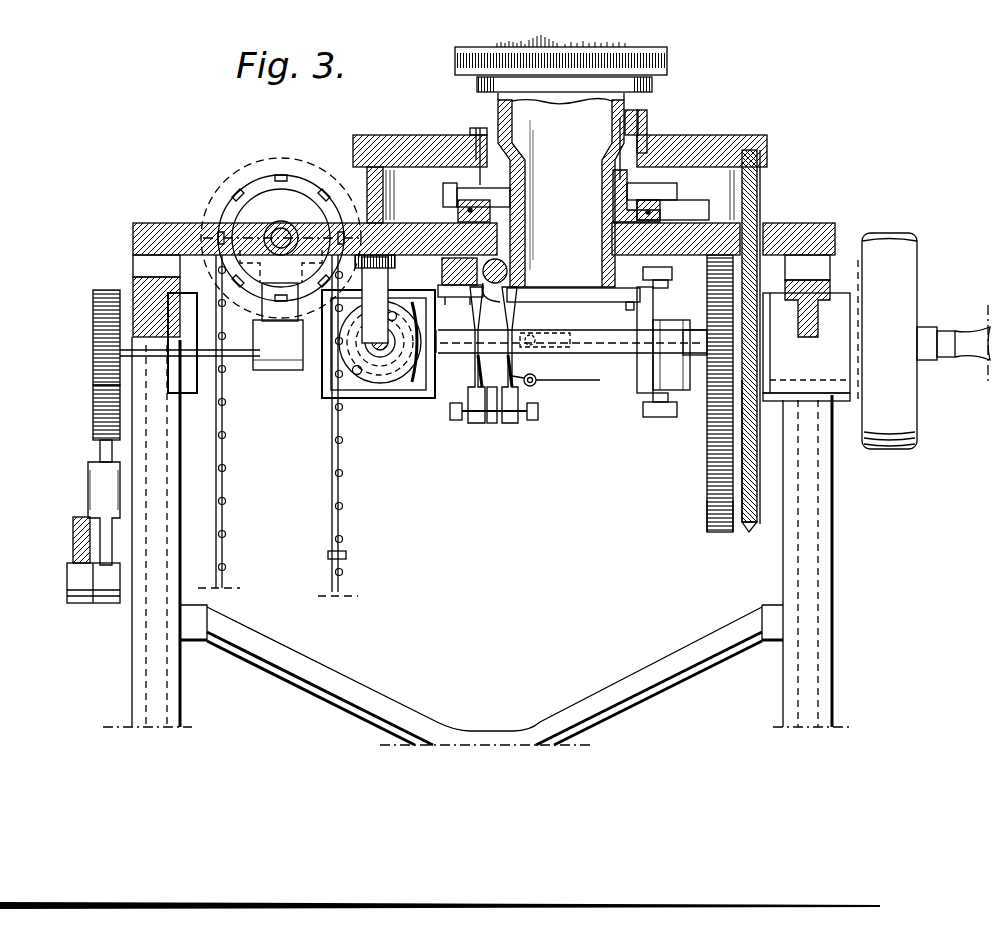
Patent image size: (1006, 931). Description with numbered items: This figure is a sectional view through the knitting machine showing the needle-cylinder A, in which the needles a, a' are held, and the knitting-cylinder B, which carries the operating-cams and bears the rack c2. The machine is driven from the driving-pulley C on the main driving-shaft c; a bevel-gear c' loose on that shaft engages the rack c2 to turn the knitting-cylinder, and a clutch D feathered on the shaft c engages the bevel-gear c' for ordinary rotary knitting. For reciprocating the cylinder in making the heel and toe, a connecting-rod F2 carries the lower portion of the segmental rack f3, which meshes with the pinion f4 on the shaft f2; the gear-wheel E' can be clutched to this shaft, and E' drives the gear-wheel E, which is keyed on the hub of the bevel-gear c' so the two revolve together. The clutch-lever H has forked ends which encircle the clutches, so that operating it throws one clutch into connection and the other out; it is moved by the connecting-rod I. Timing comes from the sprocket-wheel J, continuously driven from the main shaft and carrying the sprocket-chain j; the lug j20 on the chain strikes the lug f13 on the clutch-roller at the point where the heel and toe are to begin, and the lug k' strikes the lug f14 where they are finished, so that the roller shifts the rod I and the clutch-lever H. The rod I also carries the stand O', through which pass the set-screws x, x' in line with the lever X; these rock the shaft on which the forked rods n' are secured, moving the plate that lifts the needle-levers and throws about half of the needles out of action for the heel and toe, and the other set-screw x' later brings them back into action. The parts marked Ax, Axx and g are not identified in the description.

The needle a' is at (561, 56).
The rack c2 is at (372, 134).
The needle-cylinder A is at (561, 190).
The knitting-cylinder B is at (478, 135).
The needles a is at (576, 160).
The sprocket-wheel J is at (245, 212).
The sprocket-chain j is at (213, 216).
The pinion f4 is at (94, 362).
The segmental rack f3 is at (94, 432).
The connecting-rod F2 is at (73, 548).
The frame post Ax is at (134, 668).
The hopper Axx is at (438, 722).
The lug k' is at (352, 553).
The shaft f2 is at (245, 343).
The lug j20 is at (325, 312).
The lug f13 is at (396, 320).
The lug f14 is at (360, 374).
The connecting-rod I is at (452, 299).
The pin g is at (508, 270).
The bevel-gear c' is at (571, 356).
The forked rods n' is at (573, 310).
The lever X is at (493, 372).
The set-screw x is at (484, 423).
The set-screw x' is at (530, 423).
The stand O' is at (556, 394).
The clutch D is at (642, 400).
The clutch-lever H is at (672, 274).
The gear-wheel E is at (700, 393).
The gear-wheel E' is at (698, 516).
The main driving-shaft c is at (766, 451).
The driving-pulley C is at (875, 238).